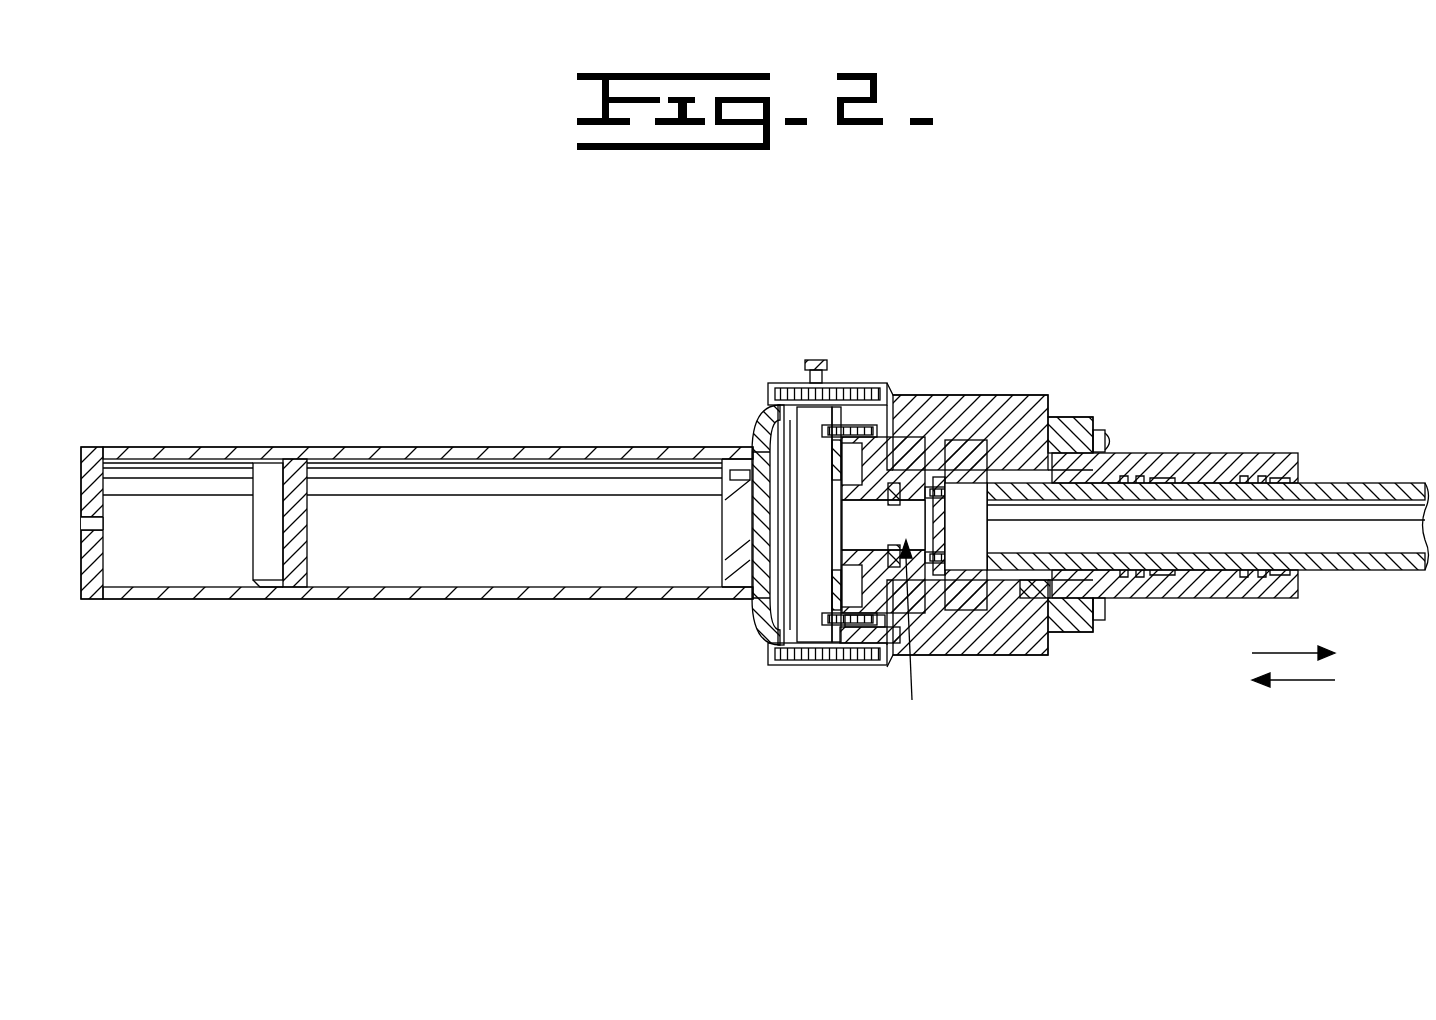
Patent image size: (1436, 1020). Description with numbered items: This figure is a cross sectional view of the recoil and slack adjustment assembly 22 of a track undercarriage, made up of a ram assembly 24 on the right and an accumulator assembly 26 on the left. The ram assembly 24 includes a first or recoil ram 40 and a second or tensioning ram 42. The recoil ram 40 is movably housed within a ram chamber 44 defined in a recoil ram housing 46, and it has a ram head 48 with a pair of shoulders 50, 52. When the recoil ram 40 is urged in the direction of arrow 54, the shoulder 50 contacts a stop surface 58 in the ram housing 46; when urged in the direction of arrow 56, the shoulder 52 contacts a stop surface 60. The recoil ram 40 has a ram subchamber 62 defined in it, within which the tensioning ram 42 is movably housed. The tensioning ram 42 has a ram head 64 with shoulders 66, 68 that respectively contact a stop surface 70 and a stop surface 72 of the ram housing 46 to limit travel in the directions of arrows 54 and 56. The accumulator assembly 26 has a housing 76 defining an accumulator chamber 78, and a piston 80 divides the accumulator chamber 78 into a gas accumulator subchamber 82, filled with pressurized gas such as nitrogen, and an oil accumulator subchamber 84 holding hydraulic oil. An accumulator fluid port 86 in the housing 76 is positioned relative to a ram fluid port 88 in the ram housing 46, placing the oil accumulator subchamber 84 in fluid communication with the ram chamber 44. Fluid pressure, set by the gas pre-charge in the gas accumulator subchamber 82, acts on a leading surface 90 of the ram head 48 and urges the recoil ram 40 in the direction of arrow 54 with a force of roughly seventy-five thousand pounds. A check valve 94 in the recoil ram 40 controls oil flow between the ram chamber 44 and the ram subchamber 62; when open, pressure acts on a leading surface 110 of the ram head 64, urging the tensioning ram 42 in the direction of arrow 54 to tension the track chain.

The recoil and slack adjustment assembly 22 is at (1007, 300).
The ram assembly 24 is at (1159, 347).
The accumulator assembly 26 is at (542, 387).
The recoil ram 40 is at (1096, 422).
The tensioning ram 42 is at (1362, 483).
The ram chamber 44 is at (814, 660).
The recoil ram housing 46 is at (1027, 660).
The ram head 48 is at (822, 463).
The shoulder 50 is at (838, 376).
The shoulder 52 is at (793, 381).
The arrow 54 is at (1290, 653).
The arrow 56 is at (1298, 680).
The stop surface 58 is at (848, 644).
The stop surface 60 is at (764, 628).
The ram subchamber 62 is at (1036, 598).
The ram head 64 is at (952, 598).
The shoulder 66 is at (925, 500).
The shoulder 68 is at (930, 478).
The stop surface 70 is at (1098, 632).
The stop surface 72 is at (948, 562).
The accumulator housing 76 is at (343, 447).
The accumulator chamber 78 is at (213, 588).
The piston 80 is at (306, 585).
The gas accumulator subchamber 82 is at (135, 588).
The oil accumulator subchamber 84 is at (412, 588).
The accumulator fluid port 86 is at (720, 520).
The ram fluid port 88 is at (778, 612).
The leading surface 90 is at (825, 528).
The check valve 94 is at (910, 637).
The leading surface 110 is at (858, 400).